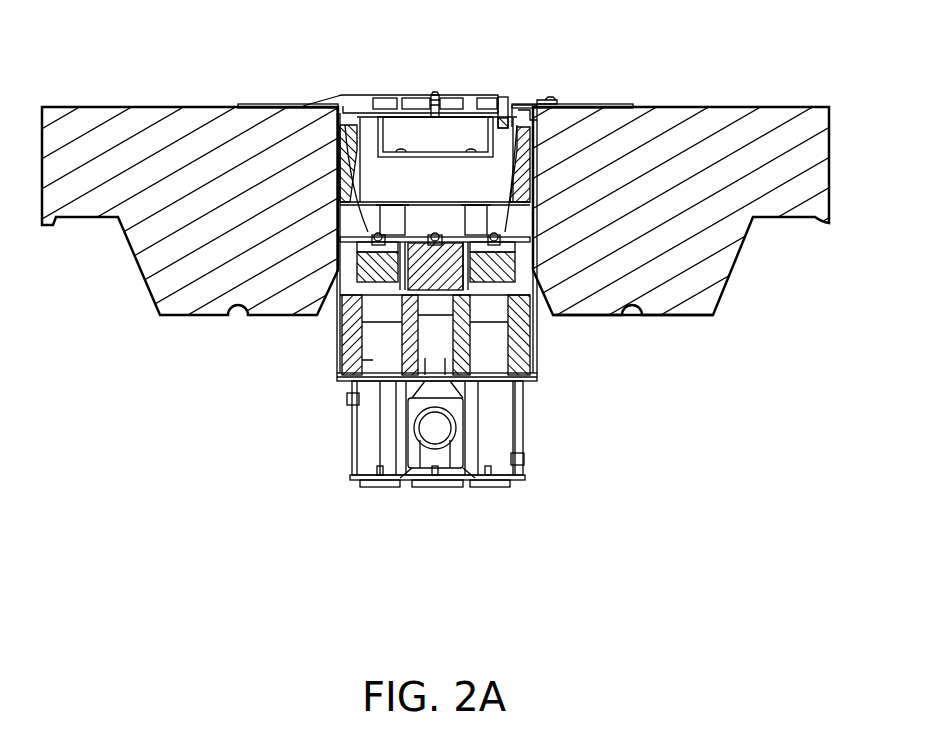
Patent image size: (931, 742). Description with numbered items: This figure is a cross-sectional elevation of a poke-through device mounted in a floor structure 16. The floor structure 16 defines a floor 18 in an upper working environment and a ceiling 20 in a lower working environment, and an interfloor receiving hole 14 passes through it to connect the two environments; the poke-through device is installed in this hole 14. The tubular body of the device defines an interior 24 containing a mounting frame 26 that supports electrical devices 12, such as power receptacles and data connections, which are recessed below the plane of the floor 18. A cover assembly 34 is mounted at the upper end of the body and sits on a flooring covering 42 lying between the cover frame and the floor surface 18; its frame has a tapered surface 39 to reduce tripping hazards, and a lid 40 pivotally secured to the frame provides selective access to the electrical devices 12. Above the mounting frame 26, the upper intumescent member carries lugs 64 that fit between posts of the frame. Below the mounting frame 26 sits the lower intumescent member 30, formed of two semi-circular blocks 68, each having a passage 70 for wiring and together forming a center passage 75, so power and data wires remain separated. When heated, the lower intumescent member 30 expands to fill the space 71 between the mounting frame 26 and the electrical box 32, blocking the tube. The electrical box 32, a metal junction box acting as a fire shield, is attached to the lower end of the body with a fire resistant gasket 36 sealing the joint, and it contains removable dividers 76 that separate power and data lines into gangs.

The electrical devices 12 is at (340, 95).
The interfloor receiving hole 14 is at (325, 303).
The floor structure 16 is at (705, 250).
The floor 18 is at (195, 107).
The ceiling 20 is at (677, 316).
The interior 24 is at (507, 225).
The mounting frame 26 is at (475, 223).
The lower intumescent member 30 is at (340, 348).
The electrical box 32 is at (525, 460).
The cover assembly 34 is at (313, 102).
The fire resistant gasket 36 is at (533, 377).
The tapered surface 39 is at (557, 102).
The lid 40 is at (434, 92).
The flooring covering 42 is at (613, 106).
The lugs 64 is at (447, 187).
The semi-circular blocks 68 is at (350, 322).
The passage 70 is at (340, 378).
The space 71 is at (403, 480).
The center passage 75 is at (467, 480).
The dividers 76 is at (373, 420).